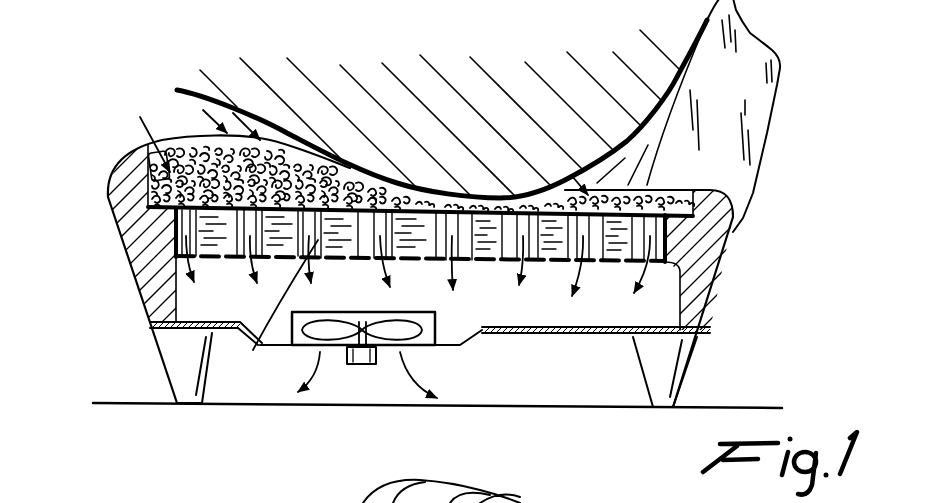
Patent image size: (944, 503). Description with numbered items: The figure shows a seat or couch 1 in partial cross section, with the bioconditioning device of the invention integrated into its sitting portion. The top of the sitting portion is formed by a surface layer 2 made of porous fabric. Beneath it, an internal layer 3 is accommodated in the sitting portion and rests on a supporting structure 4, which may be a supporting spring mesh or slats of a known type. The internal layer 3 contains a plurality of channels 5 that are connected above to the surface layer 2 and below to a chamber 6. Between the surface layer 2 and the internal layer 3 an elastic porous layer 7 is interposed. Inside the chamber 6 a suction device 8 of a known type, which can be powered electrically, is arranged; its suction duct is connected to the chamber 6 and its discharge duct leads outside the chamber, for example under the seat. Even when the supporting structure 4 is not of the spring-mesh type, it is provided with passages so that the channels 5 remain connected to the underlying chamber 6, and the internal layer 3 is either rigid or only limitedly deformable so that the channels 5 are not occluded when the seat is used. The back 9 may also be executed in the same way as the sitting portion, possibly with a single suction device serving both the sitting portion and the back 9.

The seat or couch 1 is at (113, 123).
The surface layer 2 is at (172, 147).
The internal layer 3 is at (224, 260).
The supporting structure 4 is at (500, 266).
The channels 5 is at (174, 216).
The chamber 6 is at (663, 310).
The elastic porous layer 7 is at (160, 196).
The suction device 8 is at (362, 350).
The back 9 is at (740, 157).